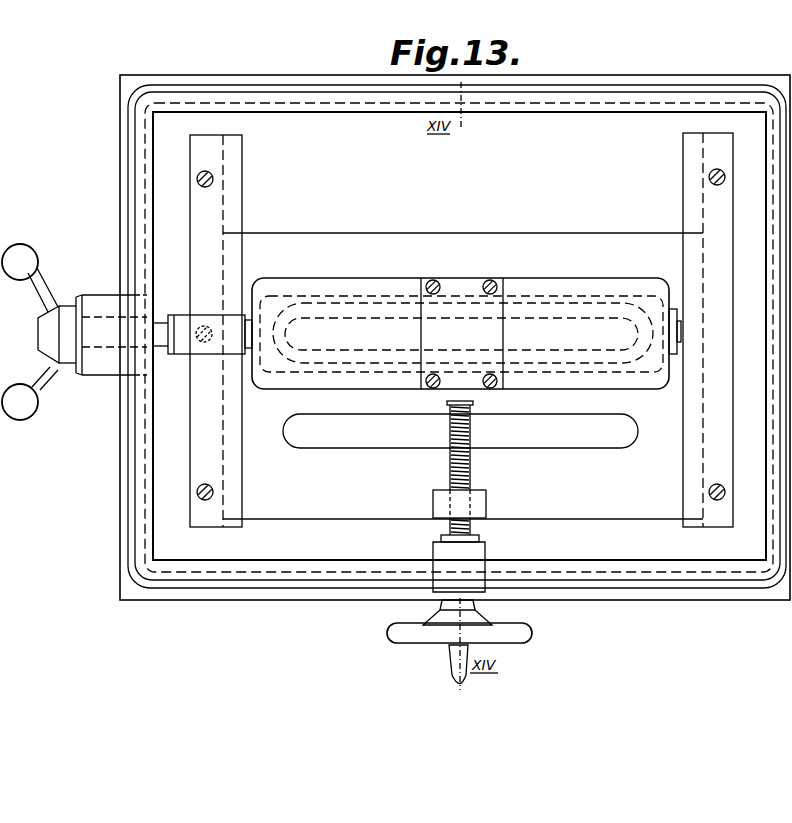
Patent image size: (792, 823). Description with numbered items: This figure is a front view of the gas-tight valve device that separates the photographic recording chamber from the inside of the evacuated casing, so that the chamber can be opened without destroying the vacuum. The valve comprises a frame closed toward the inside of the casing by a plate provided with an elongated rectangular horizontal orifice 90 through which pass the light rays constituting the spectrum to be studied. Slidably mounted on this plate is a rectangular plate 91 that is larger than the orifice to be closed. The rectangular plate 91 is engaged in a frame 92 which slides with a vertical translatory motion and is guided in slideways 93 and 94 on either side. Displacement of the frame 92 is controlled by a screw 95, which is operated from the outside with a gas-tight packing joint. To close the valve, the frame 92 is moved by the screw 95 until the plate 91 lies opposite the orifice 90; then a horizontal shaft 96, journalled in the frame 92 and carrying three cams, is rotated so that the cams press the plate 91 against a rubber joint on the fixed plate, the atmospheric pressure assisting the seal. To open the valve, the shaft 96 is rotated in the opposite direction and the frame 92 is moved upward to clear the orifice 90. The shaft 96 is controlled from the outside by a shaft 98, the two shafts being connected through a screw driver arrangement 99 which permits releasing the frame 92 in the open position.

The elongated rectangular horizontal orifice 90 is at (391, 318).
The rectangular plate 91 is at (643, 290).
The frame 92 is at (528, 233).
The slideway 93 is at (215, 527).
The slideway 94 is at (710, 515).
The screw 95 is at (462, 472).
The horizontal shaft 96 is at (218, 354).
The shaft 98 is at (92, 345).
The screw driver arrangement 99 is at (160, 340).